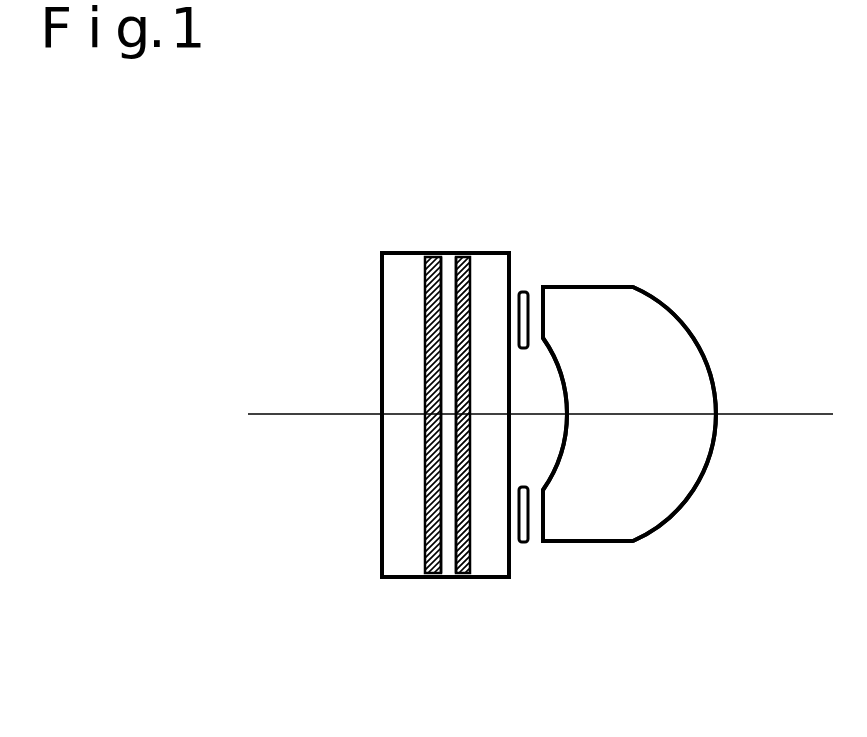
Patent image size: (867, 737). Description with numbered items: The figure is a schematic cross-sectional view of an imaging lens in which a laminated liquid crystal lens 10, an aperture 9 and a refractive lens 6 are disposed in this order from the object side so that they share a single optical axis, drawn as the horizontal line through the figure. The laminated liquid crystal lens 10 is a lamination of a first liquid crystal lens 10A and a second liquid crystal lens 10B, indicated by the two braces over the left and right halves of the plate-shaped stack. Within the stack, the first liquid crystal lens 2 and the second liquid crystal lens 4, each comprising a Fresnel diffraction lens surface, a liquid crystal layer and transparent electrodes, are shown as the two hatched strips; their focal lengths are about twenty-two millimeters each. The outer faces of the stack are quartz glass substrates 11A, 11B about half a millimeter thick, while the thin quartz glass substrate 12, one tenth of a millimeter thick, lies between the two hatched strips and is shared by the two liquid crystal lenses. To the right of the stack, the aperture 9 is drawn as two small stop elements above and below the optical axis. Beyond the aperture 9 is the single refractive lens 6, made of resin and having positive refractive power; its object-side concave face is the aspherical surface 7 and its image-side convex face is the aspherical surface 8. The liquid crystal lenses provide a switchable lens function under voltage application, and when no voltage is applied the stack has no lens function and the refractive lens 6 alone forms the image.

The first liquid crystal lens 2 is at (425, 490).
The second liquid crystal lens 4 is at (455, 440).
The refractive lens 6 is at (584, 266).
The aspherical surface 7 is at (565, 447).
The aspherical surface 8 is at (700, 352).
The aperture 9 is at (523, 290).
The laminated liquid crystal lens 10 is at (444, 186).
The first liquid crystal lens 10A is at (442, 247).
The second liquid crystal lens 10B is at (510, 247).
The quartz glass substrate 11A is at (405, 292).
The quartz glass substrate 11B is at (490, 567).
The quartz glass substrate 12 is at (445, 568).